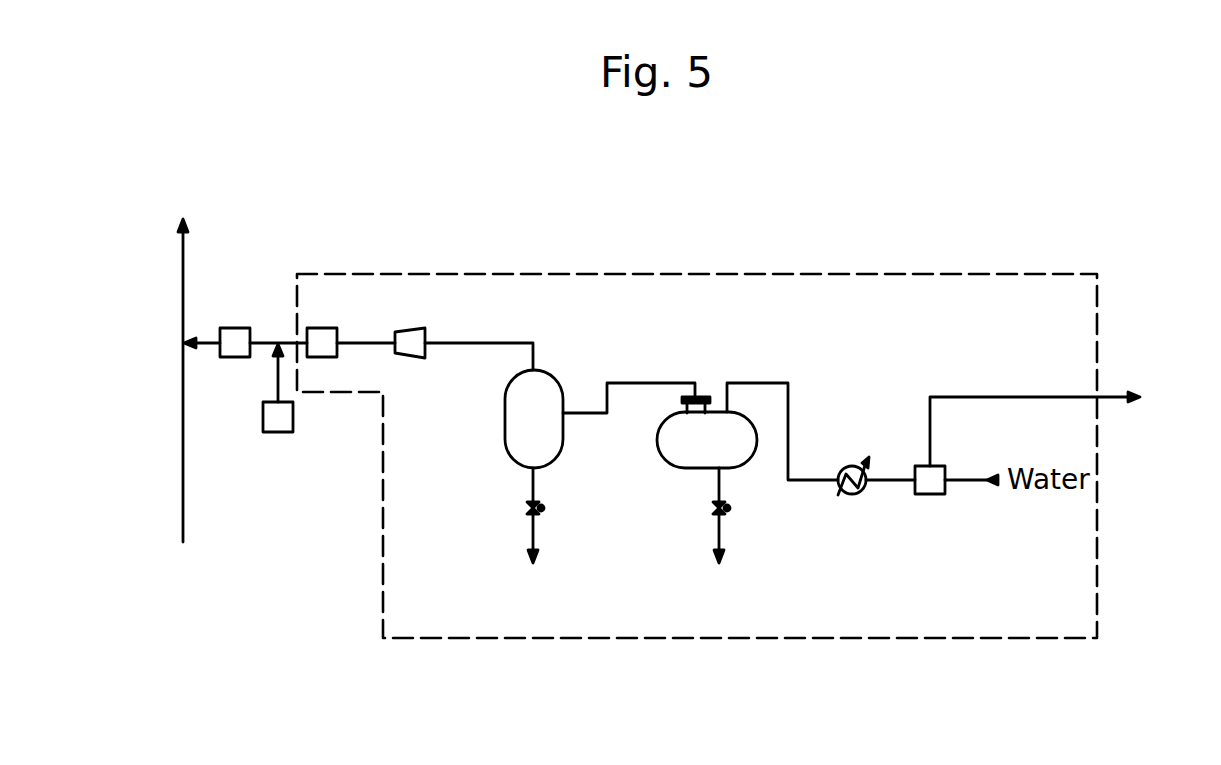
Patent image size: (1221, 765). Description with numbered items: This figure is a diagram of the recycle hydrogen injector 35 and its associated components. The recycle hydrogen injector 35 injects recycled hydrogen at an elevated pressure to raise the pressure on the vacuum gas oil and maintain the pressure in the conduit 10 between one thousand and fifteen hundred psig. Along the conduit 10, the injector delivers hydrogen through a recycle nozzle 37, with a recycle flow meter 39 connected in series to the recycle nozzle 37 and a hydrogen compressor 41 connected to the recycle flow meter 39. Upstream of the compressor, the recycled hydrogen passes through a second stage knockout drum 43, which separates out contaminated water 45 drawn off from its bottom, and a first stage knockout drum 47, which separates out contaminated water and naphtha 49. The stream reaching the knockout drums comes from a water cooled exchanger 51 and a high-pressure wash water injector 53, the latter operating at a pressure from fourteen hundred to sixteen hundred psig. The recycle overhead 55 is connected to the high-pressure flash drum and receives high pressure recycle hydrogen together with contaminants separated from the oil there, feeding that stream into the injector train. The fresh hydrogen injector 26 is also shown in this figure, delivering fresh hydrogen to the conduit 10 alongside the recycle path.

The conduit 10 is at (183, 430).
The fresh hydrogen injector 26 is at (293, 420).
The recycle hydrogen injector 35 is at (660, 638).
The recycle nozzle 37 is at (235, 328).
The recycle flow meter 39 is at (320, 328).
The hydrogen compressor 41 is at (417, 327).
The second stage knockout drum 43 is at (507, 452).
The contaminated water 45 is at (533, 536).
The first stage knockout drum 47 is at (668, 465).
The contaminated water and naphtha 49 is at (719, 536).
The water cooled exchanger 51 is at (852, 494).
The high-pressure wash water injector 53 is at (928, 497).
The recycle overhead 55 is at (1056, 423).